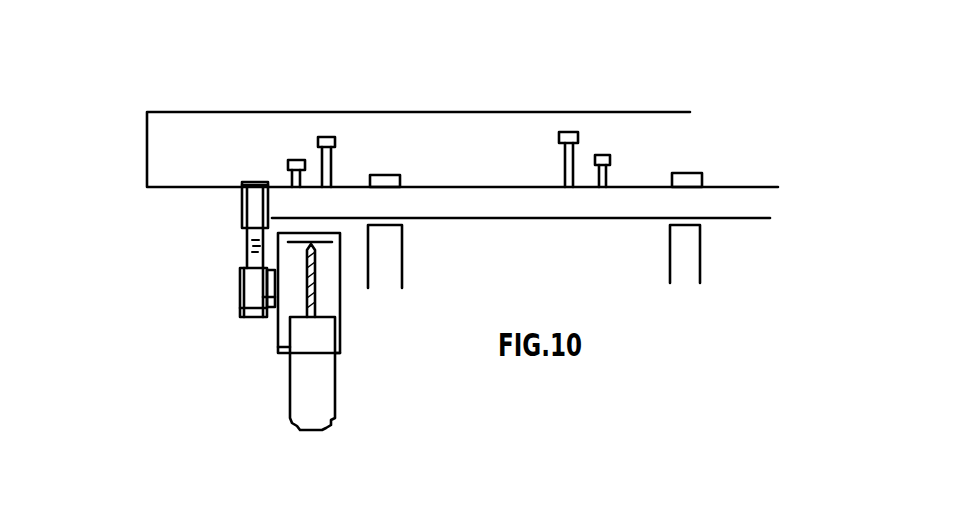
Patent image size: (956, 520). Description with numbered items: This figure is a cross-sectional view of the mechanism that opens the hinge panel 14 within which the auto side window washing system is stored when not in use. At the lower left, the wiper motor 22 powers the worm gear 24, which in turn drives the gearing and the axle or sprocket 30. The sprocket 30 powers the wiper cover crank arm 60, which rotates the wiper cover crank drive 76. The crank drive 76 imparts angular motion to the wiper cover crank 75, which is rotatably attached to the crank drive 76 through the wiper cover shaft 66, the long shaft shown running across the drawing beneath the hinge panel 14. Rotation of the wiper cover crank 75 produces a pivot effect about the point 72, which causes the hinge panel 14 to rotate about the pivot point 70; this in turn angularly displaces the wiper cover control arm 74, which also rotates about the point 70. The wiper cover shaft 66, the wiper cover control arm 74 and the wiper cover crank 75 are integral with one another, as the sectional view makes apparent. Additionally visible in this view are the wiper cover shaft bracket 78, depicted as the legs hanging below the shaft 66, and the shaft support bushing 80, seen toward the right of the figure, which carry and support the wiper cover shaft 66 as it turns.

The hinge panel 14 is at (458, 117).
The wiper cover shaft 66 is at (513, 202).
The pivot point 70 is at (323, 137).
The wiper cover control arm 74 is at (333, 160).
The pivot point 72 is at (297, 160).
The wiper cover crank 75 is at (610, 167).
The shaft support bushing 80 is at (384, 175).
The wiper cover shaft bracket 78 is at (387, 262).
The wiper cover crank drive 76 is at (242, 202).
The wiper cover crank arm 60 is at (247, 247).
The sprocket 30 is at (240, 300).
The worm gear 24 is at (317, 292).
The wiper motor 22 is at (298, 373).